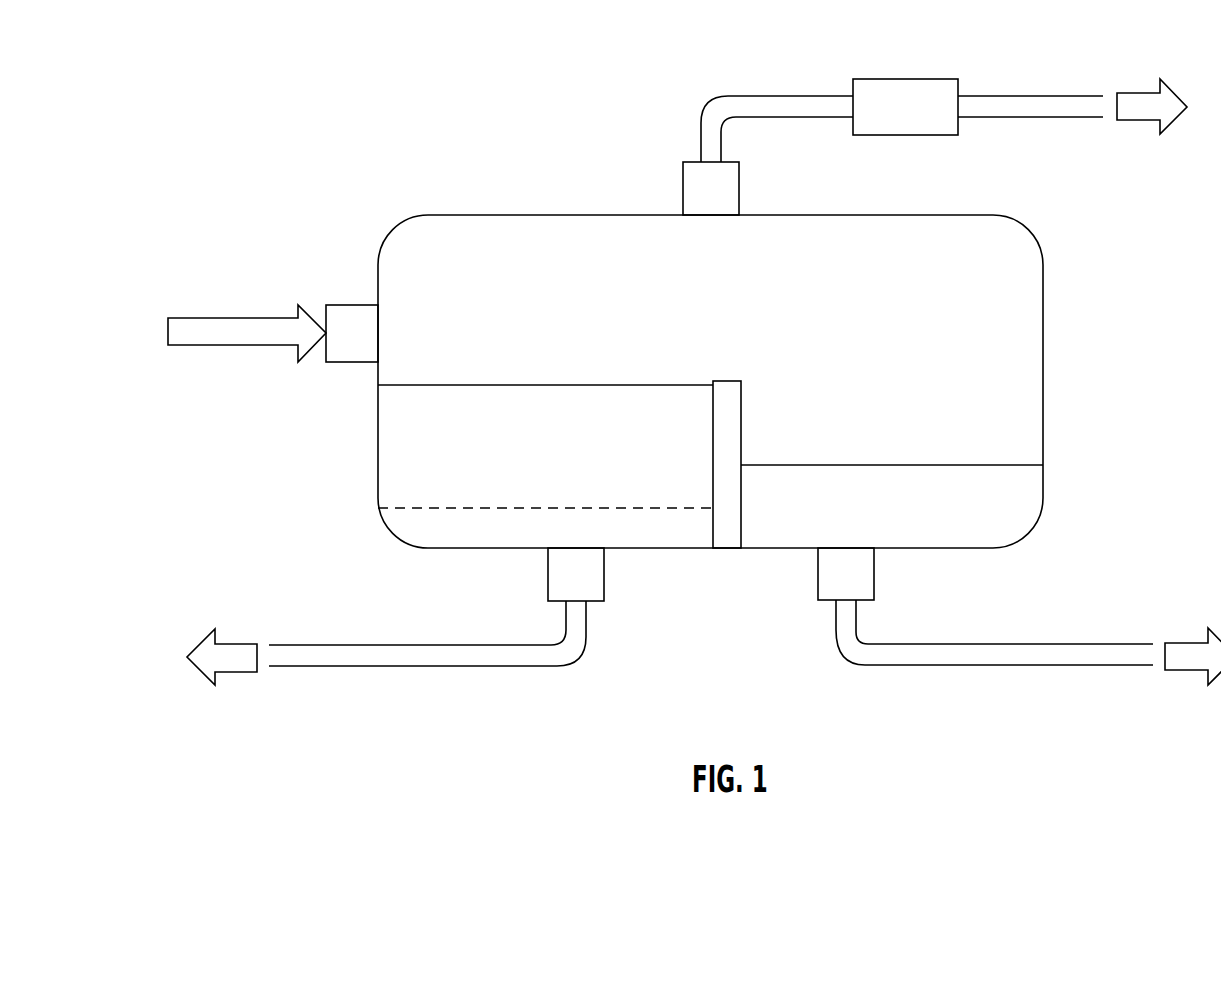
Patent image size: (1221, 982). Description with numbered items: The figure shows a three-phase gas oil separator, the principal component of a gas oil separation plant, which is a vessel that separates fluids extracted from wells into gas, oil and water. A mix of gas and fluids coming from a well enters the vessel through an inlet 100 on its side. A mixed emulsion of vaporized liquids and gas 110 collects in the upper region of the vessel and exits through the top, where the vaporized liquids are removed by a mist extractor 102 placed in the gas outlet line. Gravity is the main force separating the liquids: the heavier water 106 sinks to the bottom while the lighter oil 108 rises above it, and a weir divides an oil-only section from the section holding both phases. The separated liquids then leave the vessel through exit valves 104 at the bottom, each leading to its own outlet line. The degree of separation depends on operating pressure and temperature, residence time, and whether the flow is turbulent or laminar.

The inlet 100 is at (233, 318).
The mist extractor 102 is at (905, 135).
The exit valves 104 is at (548, 573).
The water 106 is at (533, 543).
The oil 108 is at (533, 461).
The gas 110 is at (678, 341).